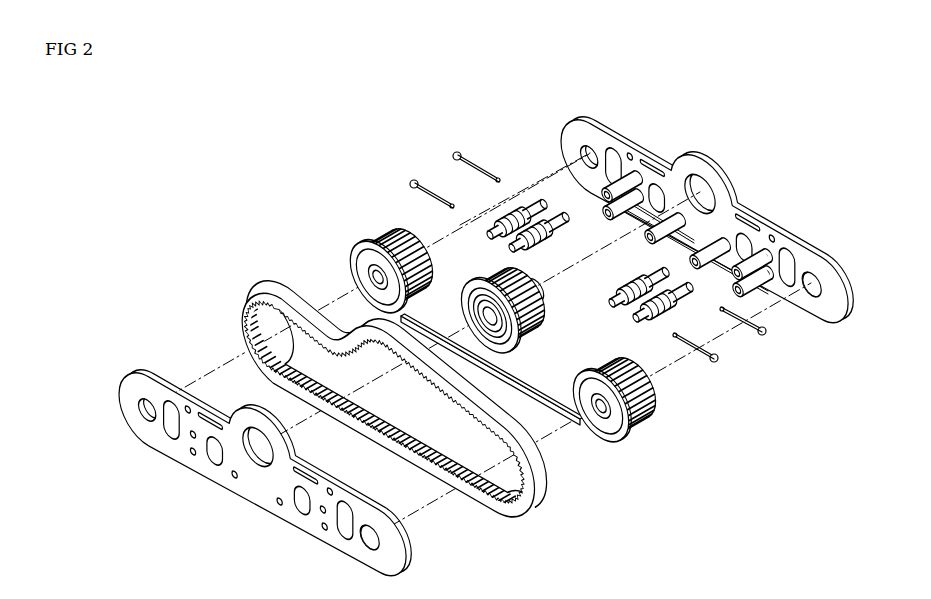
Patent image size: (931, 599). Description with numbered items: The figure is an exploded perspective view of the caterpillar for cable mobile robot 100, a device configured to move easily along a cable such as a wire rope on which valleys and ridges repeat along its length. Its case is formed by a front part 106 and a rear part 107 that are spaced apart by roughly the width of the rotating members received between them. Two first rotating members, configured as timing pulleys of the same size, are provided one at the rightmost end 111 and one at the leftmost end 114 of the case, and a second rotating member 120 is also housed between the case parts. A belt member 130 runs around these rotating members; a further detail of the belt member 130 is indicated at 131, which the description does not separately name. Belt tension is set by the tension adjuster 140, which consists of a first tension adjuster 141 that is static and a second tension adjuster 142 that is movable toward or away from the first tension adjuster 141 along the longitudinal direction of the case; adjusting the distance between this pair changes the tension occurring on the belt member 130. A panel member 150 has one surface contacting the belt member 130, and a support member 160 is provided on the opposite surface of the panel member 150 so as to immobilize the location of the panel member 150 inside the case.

The caterpillar for cable mobile robot 100 is at (277, 122).
The front part 106 is at (270, 497).
The rear part 107 is at (694, 160).
The rightmost end 111 is at (381, 241).
The leftmost end 114 is at (650, 428).
The second rotating member 120 is at (534, 306).
The belt member 130 is at (518, 503).
The belt teeth 131 is at (488, 500).
The tension adjuster 140 is at (492, 133).
The first tension adjuster 141 is at (560, 208).
The second tension adjuster 142 is at (528, 204).
The panel member 150 is at (556, 423).
The support member 160 is at (741, 212).